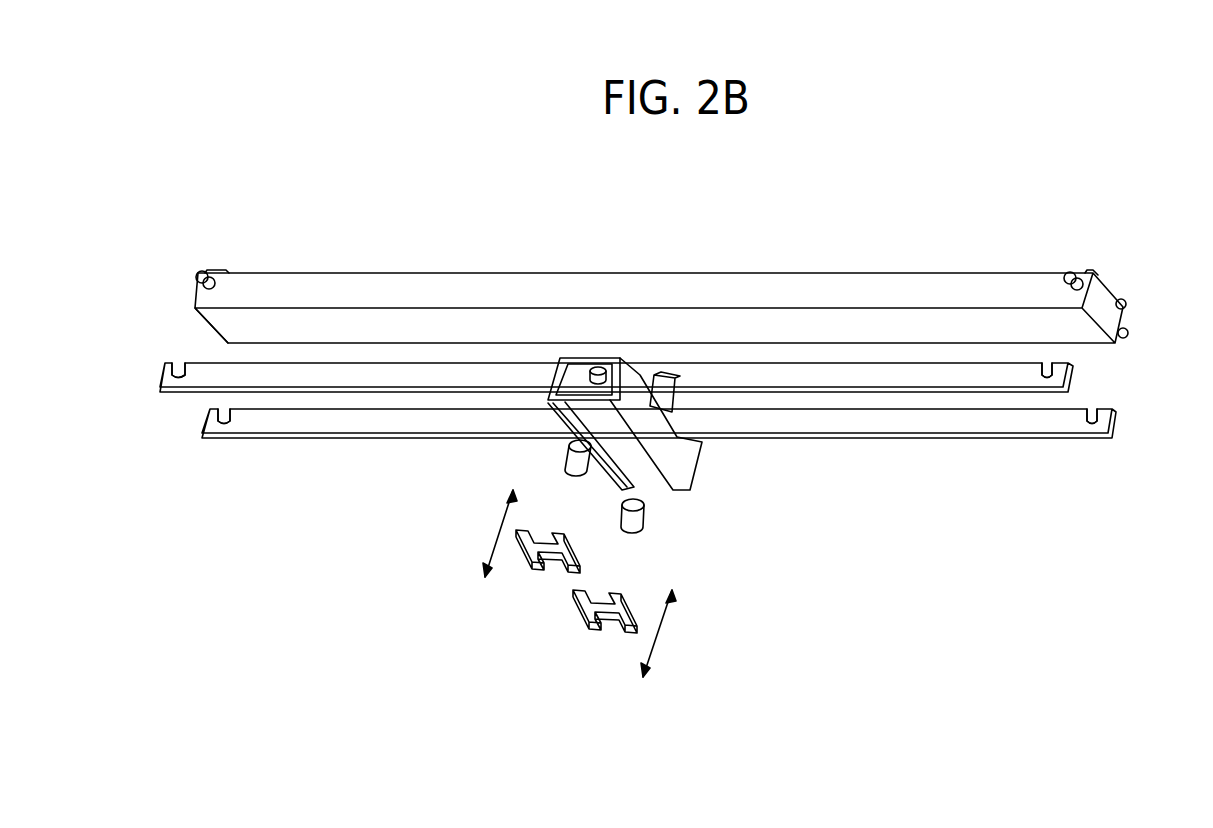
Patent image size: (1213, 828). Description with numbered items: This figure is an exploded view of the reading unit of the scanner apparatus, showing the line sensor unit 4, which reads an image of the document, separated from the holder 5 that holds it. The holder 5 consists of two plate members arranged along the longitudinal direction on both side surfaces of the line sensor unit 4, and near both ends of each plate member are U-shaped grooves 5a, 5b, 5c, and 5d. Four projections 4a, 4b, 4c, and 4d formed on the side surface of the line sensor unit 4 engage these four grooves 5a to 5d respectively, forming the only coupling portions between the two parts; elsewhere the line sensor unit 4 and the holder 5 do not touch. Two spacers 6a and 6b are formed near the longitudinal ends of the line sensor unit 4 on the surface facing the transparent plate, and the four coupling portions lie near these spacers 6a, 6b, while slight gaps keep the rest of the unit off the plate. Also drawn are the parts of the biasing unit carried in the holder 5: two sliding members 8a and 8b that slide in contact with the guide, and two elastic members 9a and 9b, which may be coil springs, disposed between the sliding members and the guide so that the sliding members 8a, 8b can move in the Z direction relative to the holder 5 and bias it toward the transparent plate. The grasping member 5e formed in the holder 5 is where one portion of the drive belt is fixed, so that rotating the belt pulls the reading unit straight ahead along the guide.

The line sensor unit 4 is at (1115, 318).
The projection 4a is at (197, 275).
The projection 4b is at (222, 343).
The projection 4c is at (1068, 272).
The projection 4d is at (1125, 338).
The spacer 6a is at (222, 271).
The spacer 6b is at (1095, 272).
The holder 5 is at (900, 425).
The U-shaped groove 5a is at (175, 385).
The U-shaped groove 5b is at (222, 435).
The U-shaped groove 5c is at (1040, 385).
The U-shaped groove 5d is at (1112, 425).
The grasping member 5e is at (677, 410).
The sliding member 8a is at (528, 563).
The sliding member 8b is at (590, 630).
The elastic member 9a is at (568, 452).
The elastic member 9b is at (647, 517).